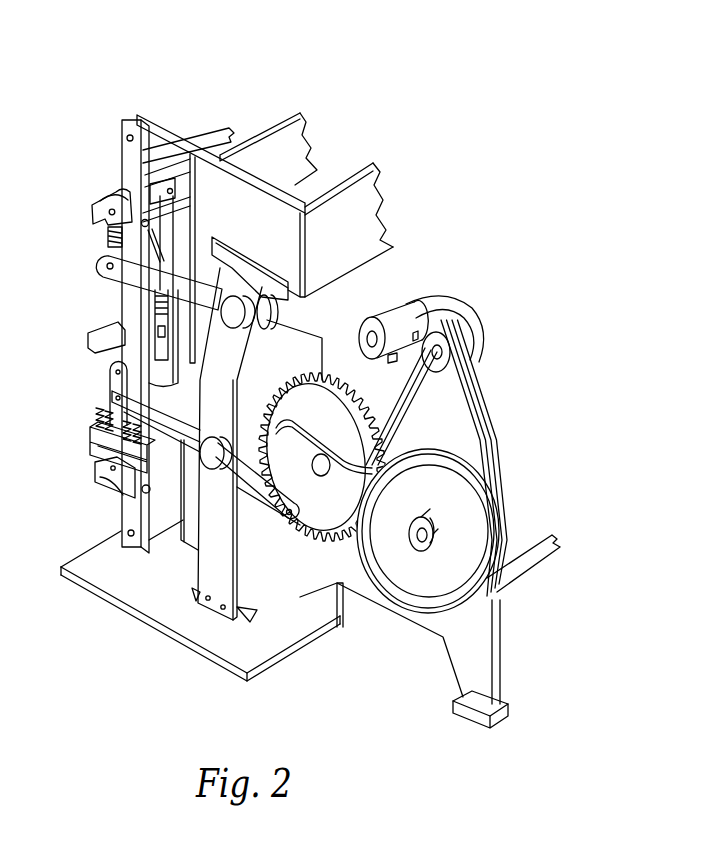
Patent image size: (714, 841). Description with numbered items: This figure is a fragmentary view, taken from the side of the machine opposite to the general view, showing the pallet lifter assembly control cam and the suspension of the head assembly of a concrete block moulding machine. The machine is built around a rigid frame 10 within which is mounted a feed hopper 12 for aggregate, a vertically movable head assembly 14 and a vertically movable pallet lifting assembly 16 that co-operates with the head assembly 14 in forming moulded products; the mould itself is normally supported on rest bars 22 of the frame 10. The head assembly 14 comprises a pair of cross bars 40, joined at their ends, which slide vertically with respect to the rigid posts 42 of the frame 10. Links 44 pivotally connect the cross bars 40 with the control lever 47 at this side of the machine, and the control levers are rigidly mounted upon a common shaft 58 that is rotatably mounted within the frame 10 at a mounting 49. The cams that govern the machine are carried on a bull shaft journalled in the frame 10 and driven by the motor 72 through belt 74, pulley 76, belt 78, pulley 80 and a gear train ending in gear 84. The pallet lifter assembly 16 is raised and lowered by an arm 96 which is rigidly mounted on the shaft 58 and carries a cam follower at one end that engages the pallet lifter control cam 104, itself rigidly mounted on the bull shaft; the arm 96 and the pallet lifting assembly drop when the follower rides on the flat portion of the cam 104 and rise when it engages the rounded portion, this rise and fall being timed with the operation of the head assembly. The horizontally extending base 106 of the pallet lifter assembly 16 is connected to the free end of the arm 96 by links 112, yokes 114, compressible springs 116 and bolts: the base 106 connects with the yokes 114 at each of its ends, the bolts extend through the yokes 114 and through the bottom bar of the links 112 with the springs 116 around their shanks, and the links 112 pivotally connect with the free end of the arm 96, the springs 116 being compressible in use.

The rigid frame 10 is at (450, 662).
The feed hopper 12 is at (376, 180).
The head assembly 14 is at (246, 110).
The pallet lifting assembly 16 is at (66, 431).
The rest bars 22 is at (92, 345).
The cross bars 40 is at (215, 145).
The rigid posts 42 is at (124, 148).
The links 44 is at (108, 228).
The control lever 47 is at (120, 270).
The shaft mounting 49 is at (236, 328).
The common shaft 58 is at (290, 300).
The motor 72 is at (383, 313).
The belt 74 is at (443, 305).
The pulley 76 is at (477, 340).
The belt 78 is at (485, 407).
The pulley 80 is at (437, 443).
The gear 84 is at (333, 540).
The arm 96 is at (110, 391).
The pallet lifter control cam 104 is at (312, 442).
The horizontally extending base 106 is at (95, 482).
The links 112 is at (110, 378).
The yokes 114 is at (93, 443).
The compressible springs 116 is at (98, 411).